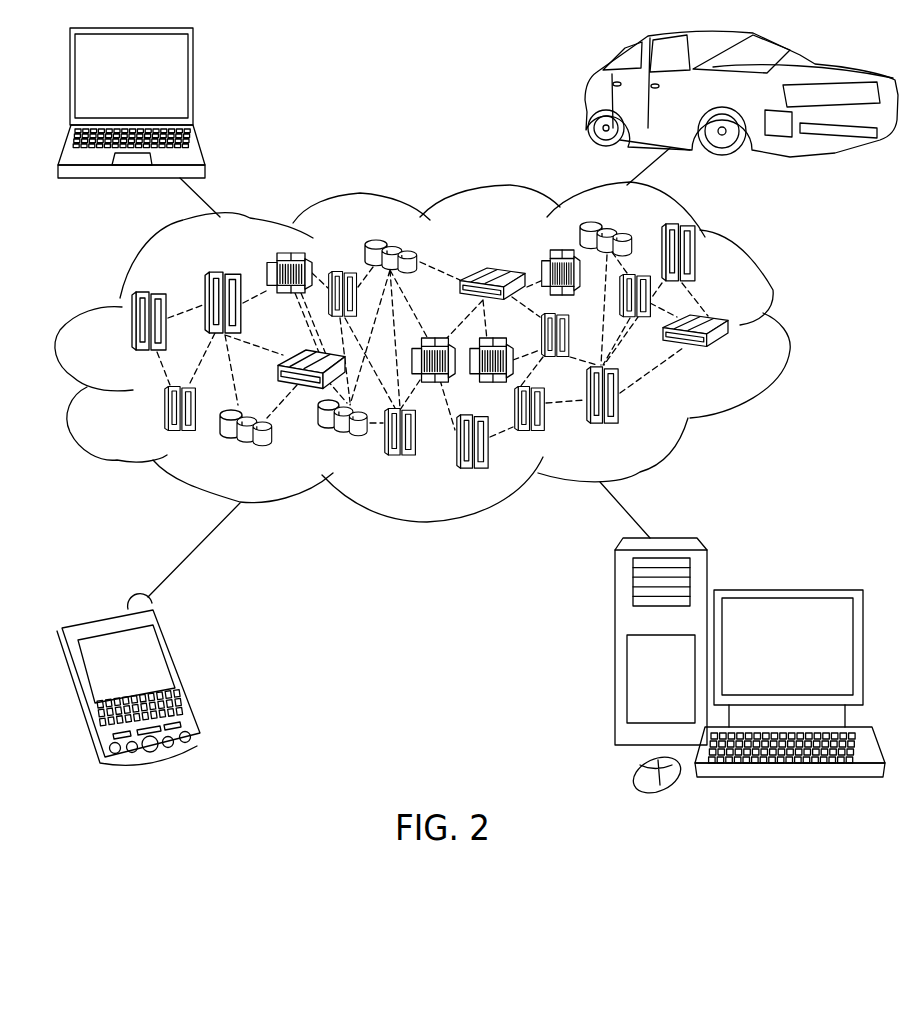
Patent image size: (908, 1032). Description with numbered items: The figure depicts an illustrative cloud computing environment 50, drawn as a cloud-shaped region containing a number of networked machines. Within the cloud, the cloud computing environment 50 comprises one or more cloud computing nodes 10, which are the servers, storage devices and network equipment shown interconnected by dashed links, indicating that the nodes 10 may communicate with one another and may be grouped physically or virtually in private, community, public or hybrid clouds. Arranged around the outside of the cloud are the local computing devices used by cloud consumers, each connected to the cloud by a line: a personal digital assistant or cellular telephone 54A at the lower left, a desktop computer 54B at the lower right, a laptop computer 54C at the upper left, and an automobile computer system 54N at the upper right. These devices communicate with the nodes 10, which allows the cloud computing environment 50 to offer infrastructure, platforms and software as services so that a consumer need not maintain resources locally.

The cloud computing node 10 is at (733, 357).
The cloud computing environment 50 is at (785, 331).
The personal digital assistant or cellular telephone 54A is at (185, 676).
The desktop computer 54B is at (786, 590).
The laptop computer 54C is at (193, 83).
The automobile computer system 54N is at (590, 100).